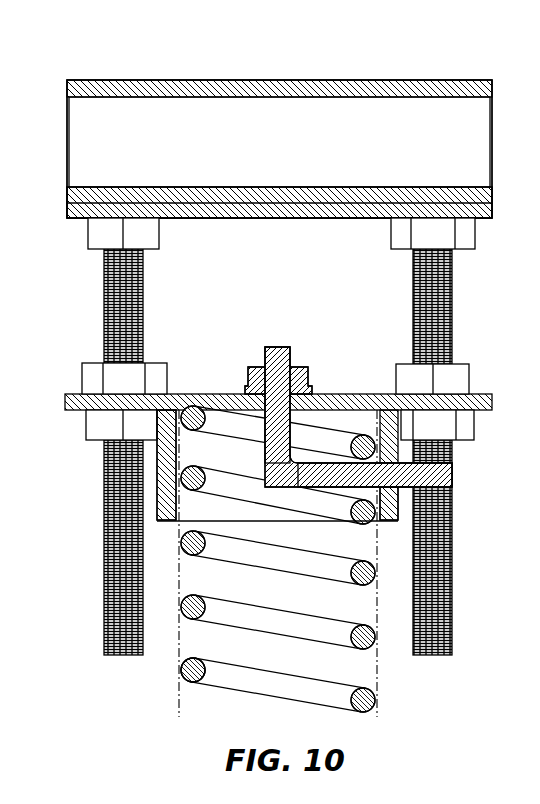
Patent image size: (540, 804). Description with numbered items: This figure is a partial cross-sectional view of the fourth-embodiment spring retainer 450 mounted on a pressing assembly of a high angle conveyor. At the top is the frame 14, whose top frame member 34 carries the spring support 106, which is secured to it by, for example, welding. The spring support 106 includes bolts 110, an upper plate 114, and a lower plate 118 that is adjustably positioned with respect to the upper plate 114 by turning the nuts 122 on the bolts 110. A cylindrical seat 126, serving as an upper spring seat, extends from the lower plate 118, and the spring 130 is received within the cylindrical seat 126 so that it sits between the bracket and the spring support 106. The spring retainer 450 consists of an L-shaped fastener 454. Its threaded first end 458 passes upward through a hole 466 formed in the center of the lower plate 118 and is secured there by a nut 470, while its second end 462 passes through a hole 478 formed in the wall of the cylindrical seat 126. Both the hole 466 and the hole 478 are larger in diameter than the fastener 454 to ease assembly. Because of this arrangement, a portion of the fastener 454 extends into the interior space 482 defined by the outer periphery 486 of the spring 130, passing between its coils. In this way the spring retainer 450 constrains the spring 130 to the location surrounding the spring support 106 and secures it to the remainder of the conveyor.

The frame 14 is at (245, 88).
The top frame member 34 is at (279, 149).
The upper plate 114 is at (273, 218).
The bolts 110 is at (104, 286).
The lower plate 118 is at (76, 410).
The nuts 122 is at (88, 377).
The spring support 106 is at (84, 507).
The cylindrical seat 126 is at (170, 522).
The spring 130 is at (180, 666).
The spring retainer 450 is at (478, 588).
The fastener 454 is at (331, 462).
The first end 458 is at (266, 358).
The second end 462 is at (452, 470).
The hole 466 is at (250, 405).
The nut 470 is at (313, 363).
The hole 478 is at (400, 511).
The interior space 482 is at (318, 535).
The outer periphery 486 is at (378, 672).